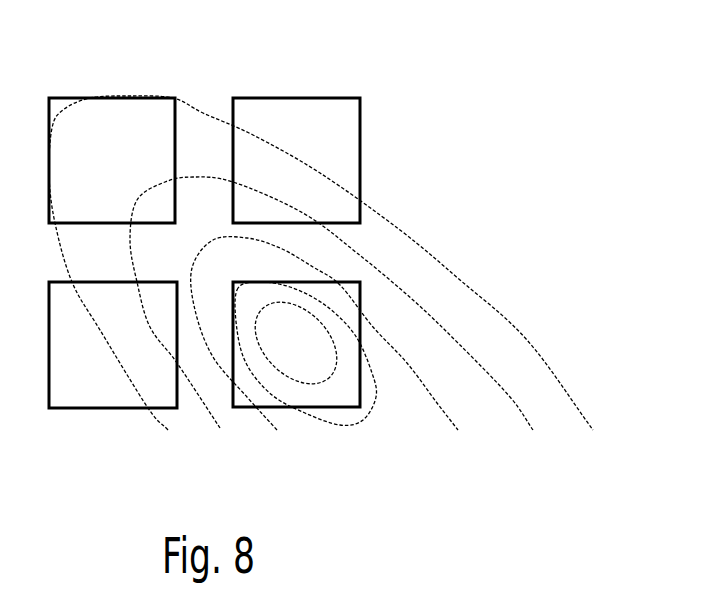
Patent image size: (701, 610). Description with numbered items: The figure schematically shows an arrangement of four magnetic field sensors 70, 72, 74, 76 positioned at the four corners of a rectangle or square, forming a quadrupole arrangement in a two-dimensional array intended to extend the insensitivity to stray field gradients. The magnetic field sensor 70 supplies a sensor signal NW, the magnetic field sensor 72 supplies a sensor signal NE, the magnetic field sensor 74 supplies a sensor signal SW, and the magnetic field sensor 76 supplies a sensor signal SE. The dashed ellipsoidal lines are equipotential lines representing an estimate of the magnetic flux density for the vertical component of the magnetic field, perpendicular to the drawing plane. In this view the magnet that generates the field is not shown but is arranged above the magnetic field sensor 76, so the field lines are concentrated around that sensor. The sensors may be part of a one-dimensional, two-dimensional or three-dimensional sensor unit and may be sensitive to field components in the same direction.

The magnetic field sensor 70 is at (70, 97).
The magnetic field sensor 72 is at (287, 97).
The magnetic field sensor 74 is at (116, 410).
The magnetic field sensor 76 is at (294, 410).